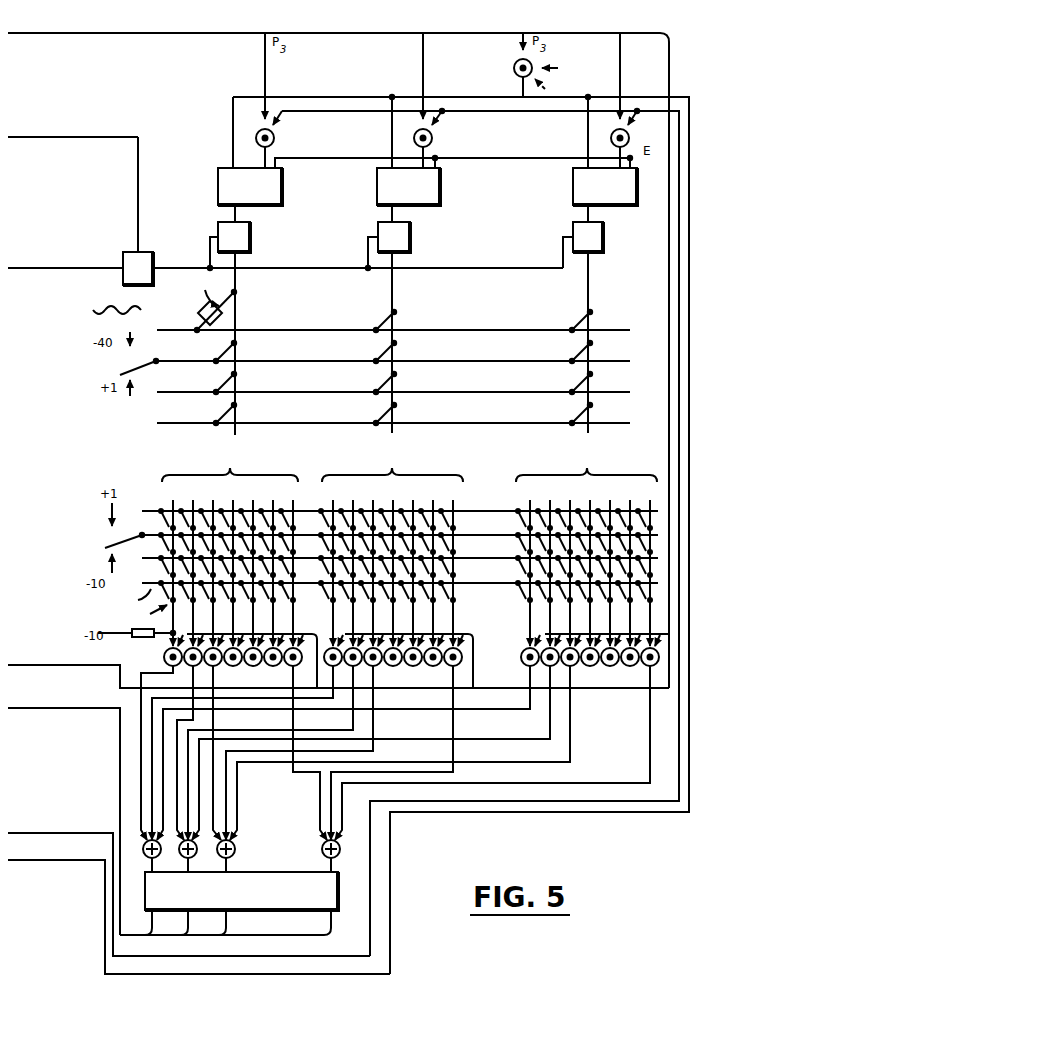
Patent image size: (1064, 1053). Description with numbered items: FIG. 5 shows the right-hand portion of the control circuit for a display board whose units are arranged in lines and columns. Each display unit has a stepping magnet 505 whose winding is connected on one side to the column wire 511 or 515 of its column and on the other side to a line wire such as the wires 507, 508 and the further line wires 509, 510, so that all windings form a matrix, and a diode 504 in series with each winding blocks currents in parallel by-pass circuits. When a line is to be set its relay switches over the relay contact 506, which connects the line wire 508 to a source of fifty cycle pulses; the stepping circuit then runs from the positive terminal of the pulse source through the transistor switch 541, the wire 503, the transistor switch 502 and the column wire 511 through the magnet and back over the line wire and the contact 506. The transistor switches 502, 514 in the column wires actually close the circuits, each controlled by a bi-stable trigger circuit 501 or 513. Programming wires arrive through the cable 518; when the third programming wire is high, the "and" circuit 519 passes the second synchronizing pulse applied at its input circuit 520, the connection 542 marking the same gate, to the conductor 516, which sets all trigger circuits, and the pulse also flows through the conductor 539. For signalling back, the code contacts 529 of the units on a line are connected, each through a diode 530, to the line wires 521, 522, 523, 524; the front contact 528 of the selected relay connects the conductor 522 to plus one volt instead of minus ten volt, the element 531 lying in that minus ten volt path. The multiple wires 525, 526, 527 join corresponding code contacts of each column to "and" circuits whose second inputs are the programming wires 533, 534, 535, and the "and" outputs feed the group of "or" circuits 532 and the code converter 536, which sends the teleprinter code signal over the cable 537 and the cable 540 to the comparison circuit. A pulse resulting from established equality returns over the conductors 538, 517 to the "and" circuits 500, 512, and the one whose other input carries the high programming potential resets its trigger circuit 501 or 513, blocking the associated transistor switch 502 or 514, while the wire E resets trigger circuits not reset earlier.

The "and" circuit 500 is at (282, 100).
The bi-stable trigger circuit 501 is at (250, 186).
The transistor switch 502 is at (247, 237).
The wire 503 is at (285, 277).
The diode 504 is at (201, 290).
The stepping magnet 505 is at (199, 311).
The relay contact 506 is at (146, 373).
The wire 507 is at (393, 321).
The wire 508 is at (393, 352).
The line 509 is at (393, 383).
The line 510 is at (393, 414).
The wire 511 is at (252, 349).
The "and" circuit 512 is at (440, 100).
The bi-stable trigger circuit 513 is at (408, 186).
The transistor switch 514 is at (406, 237).
The wire 515 is at (409, 342).
The conductor 516 is at (461, 526).
The conductor 517 is at (476, 531).
The cable 518 is at (338, 360).
The "and" circuit 519 is at (505, 65).
The input circuit 520 is at (576, 71).
The wire 521 is at (400, 503).
The conductor 522 is at (400, 526).
The wire 523 is at (400, 550).
The wire 524 is at (400, 575).
The group of multiple wires 525 is at (231, 565).
The multiple wires 526 is at (391, 565).
The multiple wires 527 is at (588, 565).
The front contact 528 is at (129, 547).
The code contact 529 is at (128, 599).
The diode 530 is at (144, 615).
The resistor 531 is at (136, 644).
The group of "or" circuits 532 is at (239, 850).
The programming wire 533 is at (256, 652).
The conductor 534 is at (415, 653).
The programming wire 535 is at (607, 624).
The code converter 536 is at (241, 891).
The cable 537 is at (225, 923).
The conductor 538 is at (189, 894).
The conductor 539 is at (199, 917).
The cable 540 is at (64, 812).
The transistor switch 541 is at (97, 211).
The line 542 is at (557, 89).